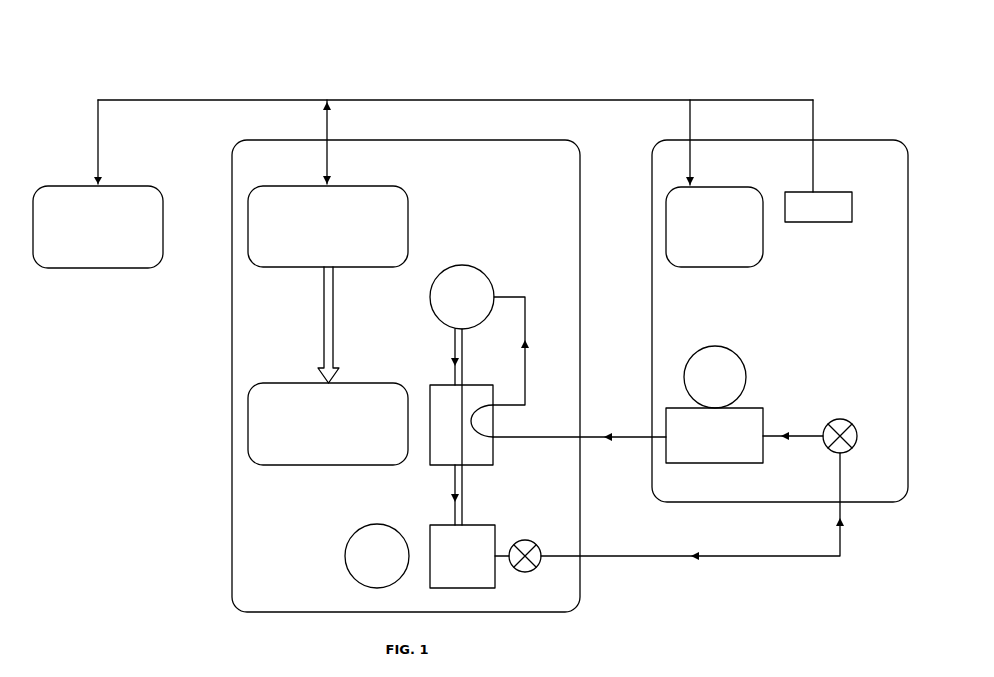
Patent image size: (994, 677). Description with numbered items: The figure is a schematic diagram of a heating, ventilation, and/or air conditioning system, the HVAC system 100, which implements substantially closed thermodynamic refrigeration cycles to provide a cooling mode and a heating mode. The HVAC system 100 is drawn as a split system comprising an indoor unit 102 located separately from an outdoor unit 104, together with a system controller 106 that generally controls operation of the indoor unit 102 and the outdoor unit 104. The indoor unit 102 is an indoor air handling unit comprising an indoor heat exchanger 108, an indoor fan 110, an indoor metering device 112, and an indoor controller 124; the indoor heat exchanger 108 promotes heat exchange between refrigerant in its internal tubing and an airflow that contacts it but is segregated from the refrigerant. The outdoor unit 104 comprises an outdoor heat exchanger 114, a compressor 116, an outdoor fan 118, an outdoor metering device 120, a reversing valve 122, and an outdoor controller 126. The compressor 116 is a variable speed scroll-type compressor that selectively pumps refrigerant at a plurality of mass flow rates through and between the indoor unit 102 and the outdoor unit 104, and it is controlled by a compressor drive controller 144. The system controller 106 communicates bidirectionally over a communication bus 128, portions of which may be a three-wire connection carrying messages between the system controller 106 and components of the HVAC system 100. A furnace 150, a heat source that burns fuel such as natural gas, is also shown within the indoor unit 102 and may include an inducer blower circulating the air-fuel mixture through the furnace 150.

The HVAC system 100 is at (188, 57).
The indoor unit 102 is at (841, 137).
The outdoor unit 104 is at (229, 180).
The system controller 106 is at (87, 238).
The indoor heat exchanger 108 is at (703, 445).
The indoor fan 110 is at (704, 384).
The indoor metering device 112 is at (851, 449).
The outdoor heat exchanger 114 is at (451, 564).
The compressor 116 is at (451, 304).
The outdoor fan 118 is at (366, 563).
The outdoor metering device 120 is at (534, 568).
The reversing valve 122 is at (497, 447).
The indoor controller 124 is at (703, 238).
The outdoor controller 126 is at (316, 238).
The communication bus 128 is at (280, 99).
The compressor drive controller 144 is at (316, 435).
The furnace 150 is at (818, 207).